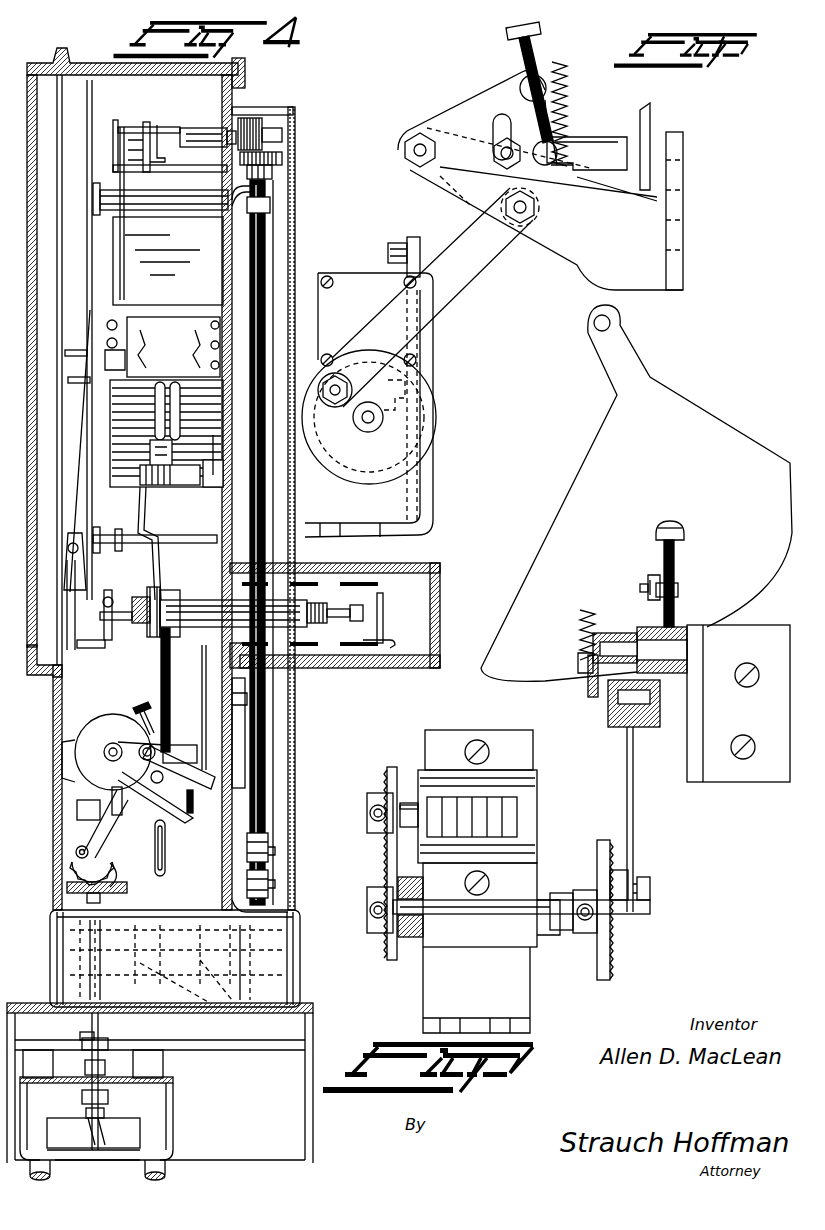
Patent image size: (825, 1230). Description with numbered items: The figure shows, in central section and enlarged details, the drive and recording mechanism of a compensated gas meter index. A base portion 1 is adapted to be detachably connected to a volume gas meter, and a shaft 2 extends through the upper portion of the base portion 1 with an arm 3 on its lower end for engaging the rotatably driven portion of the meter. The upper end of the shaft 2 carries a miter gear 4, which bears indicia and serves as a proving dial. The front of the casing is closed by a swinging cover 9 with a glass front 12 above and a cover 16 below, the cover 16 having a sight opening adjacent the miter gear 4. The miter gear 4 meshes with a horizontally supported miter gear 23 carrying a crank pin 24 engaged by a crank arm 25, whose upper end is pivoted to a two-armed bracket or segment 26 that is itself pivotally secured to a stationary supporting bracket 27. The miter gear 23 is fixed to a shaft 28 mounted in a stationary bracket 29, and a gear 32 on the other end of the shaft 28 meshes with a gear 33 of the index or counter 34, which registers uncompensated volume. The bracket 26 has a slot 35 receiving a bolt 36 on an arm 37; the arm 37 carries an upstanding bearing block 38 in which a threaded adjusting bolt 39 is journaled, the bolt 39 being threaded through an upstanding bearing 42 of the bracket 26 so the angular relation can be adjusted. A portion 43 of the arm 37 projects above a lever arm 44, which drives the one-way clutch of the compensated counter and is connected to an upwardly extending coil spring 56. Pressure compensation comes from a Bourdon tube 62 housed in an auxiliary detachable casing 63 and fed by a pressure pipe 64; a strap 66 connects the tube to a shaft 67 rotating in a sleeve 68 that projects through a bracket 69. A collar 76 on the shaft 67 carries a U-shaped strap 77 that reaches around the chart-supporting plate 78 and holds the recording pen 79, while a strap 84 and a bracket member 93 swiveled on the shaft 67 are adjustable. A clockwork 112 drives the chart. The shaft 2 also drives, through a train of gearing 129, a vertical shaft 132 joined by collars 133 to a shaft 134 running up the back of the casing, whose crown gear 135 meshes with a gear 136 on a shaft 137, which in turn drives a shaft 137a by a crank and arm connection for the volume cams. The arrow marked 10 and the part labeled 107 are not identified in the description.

In FIG. 4, the base portion 1 is at (53, 978).
In FIG. 4, the shaft 2 is at (50, 948).
In FIG. 4, the arm 3 is at (82, 1038).
In FIG. 4, the miter gear 4 is at (127, 890).
In FIG. 4, the swinging cover 9 is at (40, 670).
In FIG. 4, the direction arrow 10 is at (206, 440).
In FIG. 4, the glass front 12 is at (38, 96).
In FIG. 4, the cover 16 is at (54, 740).
In FIG. 4, the miter gear 23 is at (90, 864).
In FIG. 5, the miter gear 23 is at (393, 458).
In FIG. 6, the miter gear 23 is at (610, 955).
In FIG. 4, the crank pin 24 is at (76, 853).
In FIG. 6, the crank pin 24 is at (650, 889).
In FIG. 4, the crank arm 25 is at (113, 813).
In FIG. 5, the crank arm 25 is at (483, 258).
In FIG. 6, the crank arm 25 is at (634, 835).
In FIG. 4, the two-armed bracket or segment 26 is at (133, 737).
In FIG. 5, the two-armed bracket or segment 26 is at (443, 118).
In FIG. 6, the two-armed bracket or segment 26 is at (652, 578).
In FIG. 5, the stationary supporting bracket 27 is at (637, 240).
In FIG. 6, the stationary supporting bracket 27 is at (700, 747).
In FIG. 6, the shaft 28 is at (530, 913).
In FIG. 6, the stationary bracket 29 is at (440, 977).
In FIG. 6, the gear 32 is at (393, 950).
In FIG. 6, the gear 33 is at (392, 840).
In FIG. 6, the index or counter 34 is at (517, 802).
In FIG. 5, the slot 35 is at (502, 114).
In FIG. 5, the bolt 36 is at (500, 143).
In FIG. 4, the arm 37 is at (178, 746).
In FIG. 5, the arm 37 is at (600, 152).
In FIG. 6, the arm 37 is at (643, 627).
In FIG. 5, the upstanding bearing block 38 is at (562, 135).
In FIG. 5, the threaded adjusting bolt 39 is at (537, 58).
In FIG. 5, the upstanding bearing 42 is at (546, 87).
In FIG. 6, the portion 43 is at (583, 673).
In FIG. 4, the lever arm 44 is at (190, 783).
In FIG. 5, the lever arm 44 is at (658, 193).
In FIG. 6, the lever arm 44 is at (592, 697).
In FIG. 4, the coil spring 56 is at (161, 698).
In FIG. 5, the coil spring 56 is at (552, 146).
In FIG. 6, the coil spring 56 is at (585, 611).
In FIG. 4, the Bourdon tube 62 is at (328, 645).
In FIG. 4, the auxiliary detachable casing 63 is at (437, 575).
In FIG. 4, the pressure pipe 64 is at (165, 869).
In FIG. 4, the strap 66 is at (390, 630).
In FIG. 4, the shaft 67 is at (104, 606).
In FIG. 4, the sleeve 68 is at (138, 597).
In FIG. 4, the bracket 69 is at (153, 638).
In FIG. 4, the collar 76 is at (112, 620).
In FIG. 4, the U-shaped strap 77 is at (100, 645).
In FIG. 4, the chart-supporting plate 78 is at (93, 121).
In FIG. 4, the recording pen 79 is at (78, 444).
In FIG. 4, the strap 84 is at (123, 541).
In FIG. 4, the bracket member 93 is at (115, 533).
In FIG. 5, the plate 107 is at (647, 117).
In FIG. 6, the plate 107 is at (685, 415).
In FIG. 4, the clockwork 112 is at (213, 247).
In FIG. 4, the train of gearing 129 is at (205, 1006).
In FIG. 4, the vertical shaft 132 is at (262, 903).
In FIG. 4, the collars 133 is at (270, 851).
In FIG. 4, the shaft 134 is at (266, 715).
In FIG. 4, the crown gear 135 is at (283, 160).
In FIG. 4, the gear 136 is at (247, 117).
In FIG. 4, the shaft 137 is at (180, 130).
In FIG. 4, the shaft 137a is at (150, 133).